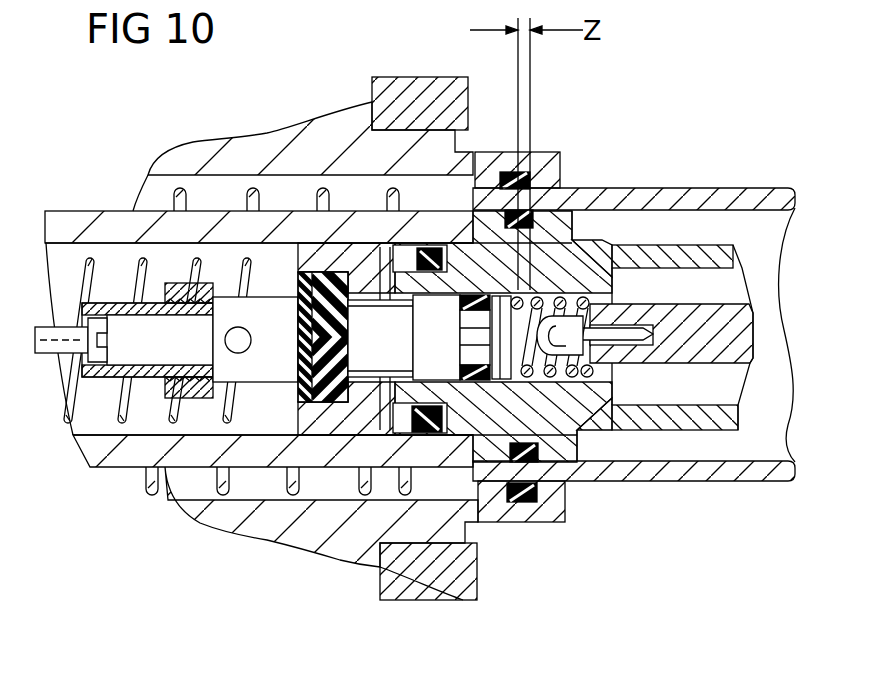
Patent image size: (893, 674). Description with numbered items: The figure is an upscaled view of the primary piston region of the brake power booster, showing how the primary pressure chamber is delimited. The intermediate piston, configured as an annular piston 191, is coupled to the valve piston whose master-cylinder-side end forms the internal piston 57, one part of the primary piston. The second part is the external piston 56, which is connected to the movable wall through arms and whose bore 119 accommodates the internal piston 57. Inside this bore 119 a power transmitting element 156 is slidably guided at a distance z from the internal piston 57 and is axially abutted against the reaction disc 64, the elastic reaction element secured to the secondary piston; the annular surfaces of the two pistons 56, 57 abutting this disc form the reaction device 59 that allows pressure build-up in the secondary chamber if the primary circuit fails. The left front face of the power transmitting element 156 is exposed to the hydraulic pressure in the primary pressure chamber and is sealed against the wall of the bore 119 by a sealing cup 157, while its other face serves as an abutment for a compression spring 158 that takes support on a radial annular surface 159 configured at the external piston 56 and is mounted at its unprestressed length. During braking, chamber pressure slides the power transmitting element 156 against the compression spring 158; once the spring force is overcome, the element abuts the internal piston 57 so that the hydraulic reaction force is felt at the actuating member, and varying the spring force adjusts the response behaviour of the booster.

The reaction device 59 is at (372, 118).
The bore 119 is at (487, 265).
The external piston 56 is at (550, 277).
The annular piston 191 is at (613, 215).
The internal piston 57 is at (658, 333).
The reaction disc 64 is at (335, 395).
The power transmitting element 156 is at (385, 355).
The sealing cup 157 is at (478, 372).
The compression spring 158 is at (557, 378).
The radial annular surface 159 is at (590, 375).